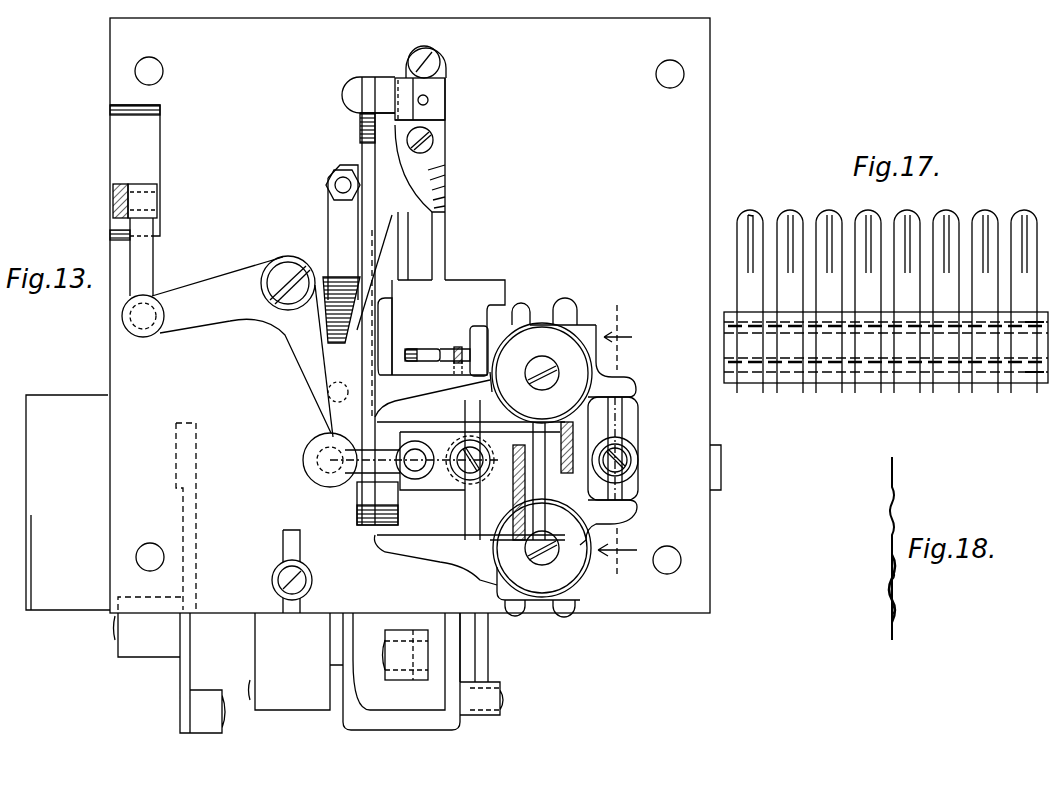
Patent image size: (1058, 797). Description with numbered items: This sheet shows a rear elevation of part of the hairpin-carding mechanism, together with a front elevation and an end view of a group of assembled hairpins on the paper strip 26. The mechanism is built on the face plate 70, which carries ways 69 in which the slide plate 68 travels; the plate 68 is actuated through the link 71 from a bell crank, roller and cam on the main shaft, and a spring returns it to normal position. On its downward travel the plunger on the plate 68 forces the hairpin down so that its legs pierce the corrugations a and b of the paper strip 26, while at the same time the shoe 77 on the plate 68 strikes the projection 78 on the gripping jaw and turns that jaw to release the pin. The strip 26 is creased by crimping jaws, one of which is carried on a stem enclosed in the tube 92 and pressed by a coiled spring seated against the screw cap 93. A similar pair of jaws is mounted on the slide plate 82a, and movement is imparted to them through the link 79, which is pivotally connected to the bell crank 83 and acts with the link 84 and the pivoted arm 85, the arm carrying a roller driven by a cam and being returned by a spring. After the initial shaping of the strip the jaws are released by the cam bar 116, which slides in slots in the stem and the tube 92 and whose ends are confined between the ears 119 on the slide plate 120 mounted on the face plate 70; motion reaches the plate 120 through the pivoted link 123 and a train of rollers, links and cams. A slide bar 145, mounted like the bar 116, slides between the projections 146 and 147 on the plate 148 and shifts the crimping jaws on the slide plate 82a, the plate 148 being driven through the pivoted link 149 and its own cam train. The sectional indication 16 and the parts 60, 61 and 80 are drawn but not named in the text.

In FIG. 13, the face plate 70 is at (706, 126).
In FIG. 13, the link 71 is at (360, 137).
In FIG. 13, the shoe 77 is at (443, 200).
In FIG. 13, the ways 69 is at (446, 222).
In FIG. 13, the slide plate 68 is at (414, 246).
In FIG. 13, the holder block 60 is at (488, 335).
In FIG. 13, the clamp 61 is at (474, 348).
In FIG. 13, the projection 78 is at (438, 352).
In FIG. 13, the section line 16 is at (617, 442).
In FIG. 13, the arm 85 is at (113, 202).
In FIG. 13, the link 84 is at (153, 272).
In FIG. 13, the bell crank 83 is at (300, 384).
In FIG. 13, the projection 146 is at (470, 406).
In FIG. 13, the screw cap 93 is at (628, 469).
In FIG. 13, the plate 148 is at (481, 440).
In FIG. 13, the ears 119 is at (636, 392).
In FIG. 13, the slide plate 120 is at (614, 427).
In FIG. 13, the cam bar 116 is at (620, 445).
In FIG. 13, the tube 92 is at (638, 456).
In FIG. 13, the link 79 is at (415, 450).
In FIG. 13, the pivot pin 80 is at (416, 473).
In FIG. 13, the slide plate 82a is at (448, 487).
In FIG. 13, the pivoted link 123 is at (568, 460).
In FIG. 13, the pivoted link 149 is at (534, 500).
In FIG. 13, the projection 147 is at (505, 546).
In FIG. 13, the slide bar 145 is at (465, 517).
In FIG. 17, the paper strip 26 is at (946, 378).
In FIG. 18, the paper strip 26 is at (890, 590).
In FIG. 17, the corrugation a is at (1024, 325).
In FIG. 18, the corrugation a is at (896, 575).
In FIG. 17, the corrugation b is at (1027, 373).
In FIG. 18, the corrugation b is at (896, 609).